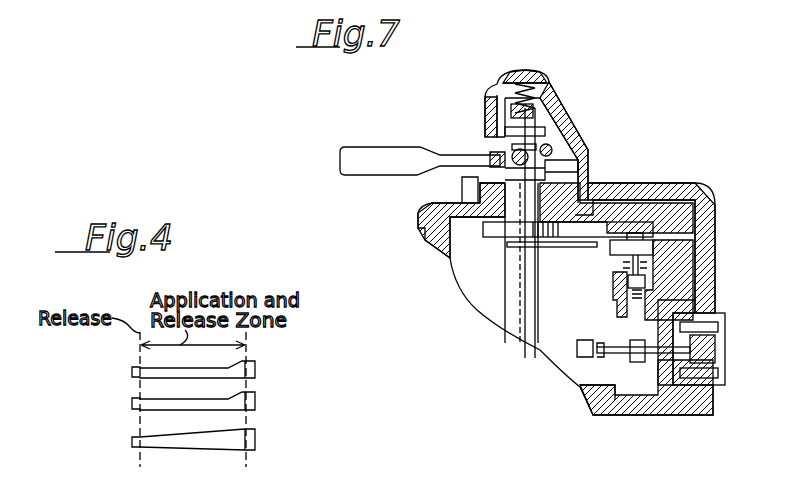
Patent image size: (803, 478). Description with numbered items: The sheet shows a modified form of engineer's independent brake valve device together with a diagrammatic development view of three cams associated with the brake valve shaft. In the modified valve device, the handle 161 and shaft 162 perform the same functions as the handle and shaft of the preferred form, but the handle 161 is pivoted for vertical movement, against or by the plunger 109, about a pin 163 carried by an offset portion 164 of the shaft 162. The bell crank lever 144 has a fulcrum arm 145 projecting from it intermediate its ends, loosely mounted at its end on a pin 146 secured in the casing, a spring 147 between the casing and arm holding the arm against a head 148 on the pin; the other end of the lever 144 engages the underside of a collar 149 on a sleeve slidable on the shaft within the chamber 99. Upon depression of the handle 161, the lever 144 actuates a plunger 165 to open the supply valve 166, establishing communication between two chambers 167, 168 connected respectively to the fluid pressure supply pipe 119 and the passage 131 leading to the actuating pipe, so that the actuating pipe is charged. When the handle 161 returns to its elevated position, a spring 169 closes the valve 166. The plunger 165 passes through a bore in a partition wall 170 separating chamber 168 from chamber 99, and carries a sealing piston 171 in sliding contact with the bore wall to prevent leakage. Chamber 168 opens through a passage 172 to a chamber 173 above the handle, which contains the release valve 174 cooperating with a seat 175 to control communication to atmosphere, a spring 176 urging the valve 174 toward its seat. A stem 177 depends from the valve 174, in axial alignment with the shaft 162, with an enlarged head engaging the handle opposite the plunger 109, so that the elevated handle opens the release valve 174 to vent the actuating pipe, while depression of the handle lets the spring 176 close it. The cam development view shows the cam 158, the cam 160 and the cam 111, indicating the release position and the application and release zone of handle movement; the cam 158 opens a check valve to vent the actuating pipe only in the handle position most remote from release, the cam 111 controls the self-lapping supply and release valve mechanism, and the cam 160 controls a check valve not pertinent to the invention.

In FIG. 7, the chamber 99 is at (602, 357).
In FIG. 7, the plunger 109 is at (483, 190).
In FIG. 4, the cam 111 is at (130, 441).
In FIG. 7, the fluid pressure supply pipe 119 is at (650, 383).
In FIG. 7, the passage 131 is at (603, 395).
In FIG. 7, the lever 144 is at (580, 332).
In FIG. 7, the fulcrum arm 145 is at (590, 248).
In FIG. 7, the pin 146 is at (660, 262).
In FIG. 7, the spring 147 is at (645, 278).
In FIG. 7, the head 148 is at (645, 238).
In FIG. 7, the collar 149 is at (492, 230).
In FIG. 4, the cam 158 is at (130, 371).
In FIG. 4, the cam 160 is at (130, 402).
In FIG. 7, the handle 161 is at (370, 157).
In FIG. 7, the shaft 162 is at (510, 295).
In FIG. 7, the pin 163 is at (545, 150).
In FIG. 7, the offset portion 164 is at (560, 170).
In FIG. 7, the plunger 165 is at (577, 352).
In FIG. 7, the supply valve 166 is at (723, 330).
In FIG. 7, the chamber 167 is at (678, 390).
In FIG. 7, the chamber 168 is at (678, 412).
In FIG. 7, the spring 169 is at (717, 350).
In FIG. 7, the partition wall 170 is at (612, 330).
In FIG. 7, the piston 171 is at (638, 362).
In FIG. 7, the passage 172 is at (668, 200).
In FIG. 7, the chamber 173 is at (543, 80).
In FIG. 7, the release valve 174 is at (512, 110).
In FIG. 7, the seat 175 is at (503, 127).
In FIG. 7, the spring 176 is at (518, 72).
In FIG. 7, the stem 177 is at (505, 147).